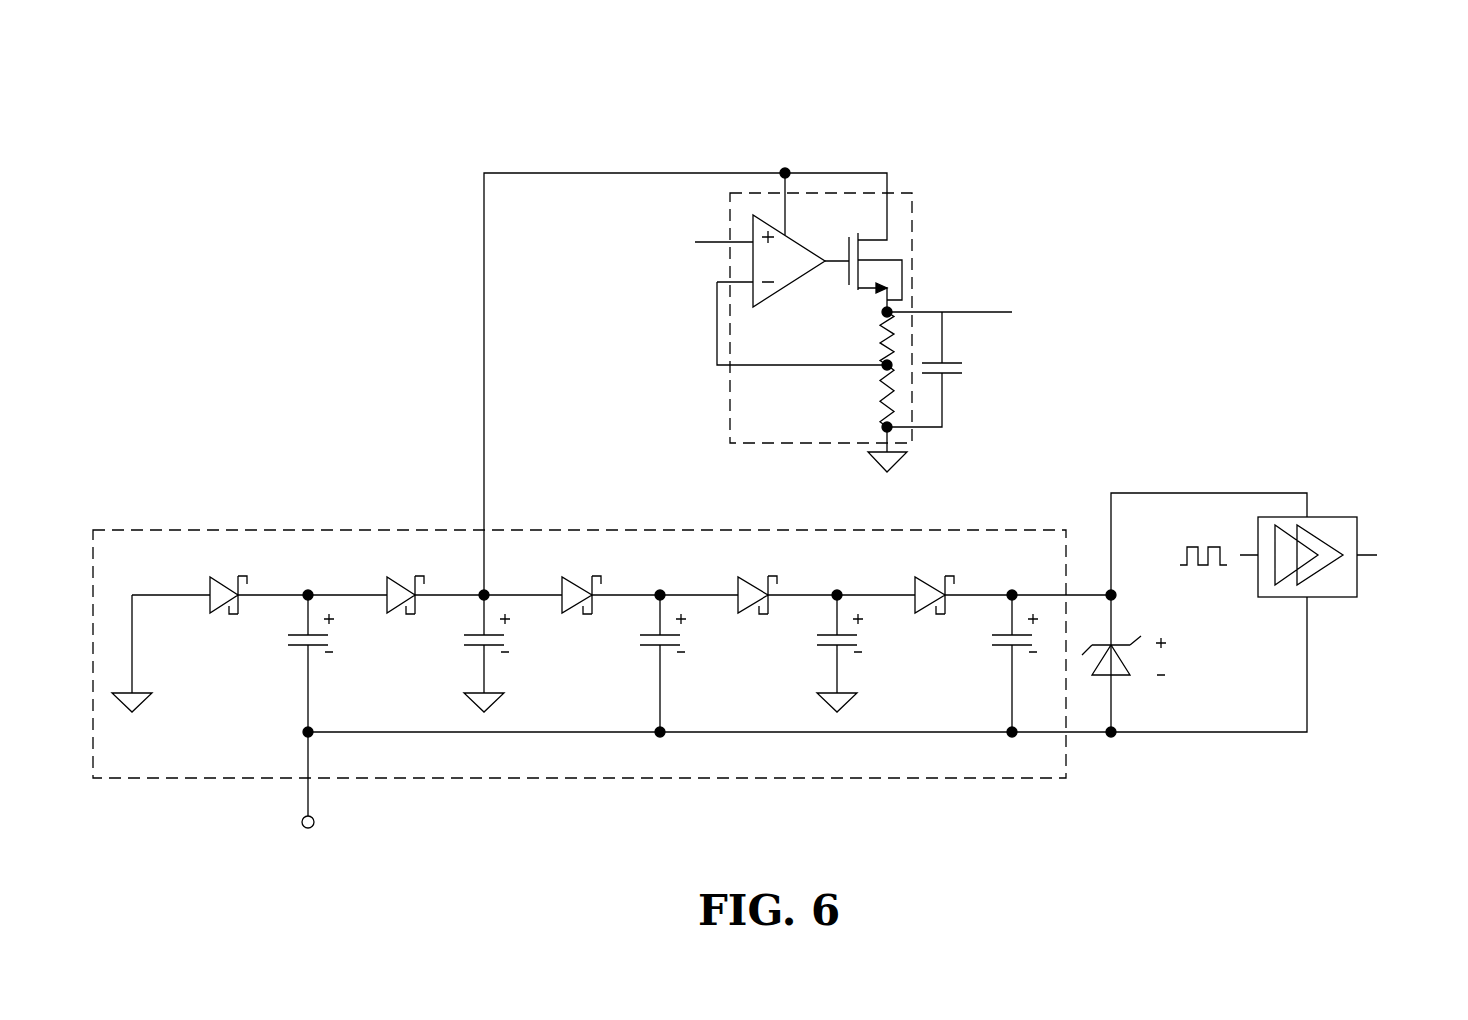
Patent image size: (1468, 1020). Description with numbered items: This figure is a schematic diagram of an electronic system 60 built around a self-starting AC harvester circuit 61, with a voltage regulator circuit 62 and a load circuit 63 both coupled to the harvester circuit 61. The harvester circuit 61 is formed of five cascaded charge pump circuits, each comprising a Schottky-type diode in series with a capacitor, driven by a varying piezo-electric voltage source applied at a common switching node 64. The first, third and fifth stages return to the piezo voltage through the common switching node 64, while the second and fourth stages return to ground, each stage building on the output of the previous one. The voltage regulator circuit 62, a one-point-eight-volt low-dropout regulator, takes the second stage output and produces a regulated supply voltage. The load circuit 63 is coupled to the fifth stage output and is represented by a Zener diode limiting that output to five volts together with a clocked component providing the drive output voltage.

The electronic system 60 is at (206, 110).
The self-starting AC harvester circuit 61 is at (302, 530).
The voltage regulator circuit 62 is at (730, 430).
The load circuit 63 is at (1172, 438).
The common switching node 64 is at (497, 733).